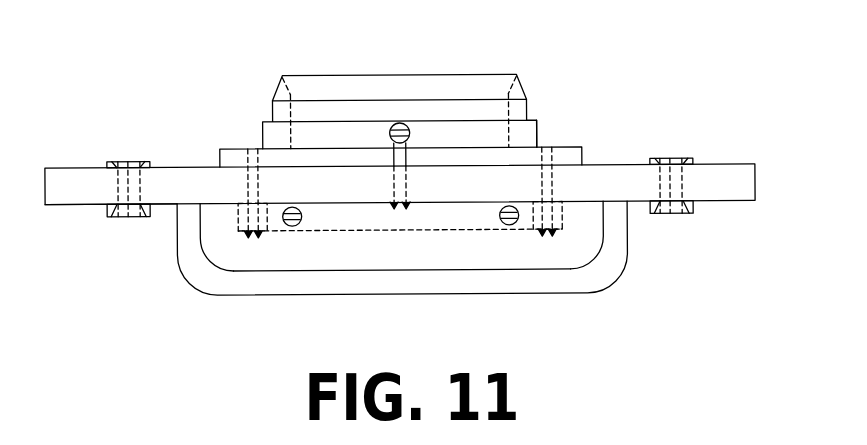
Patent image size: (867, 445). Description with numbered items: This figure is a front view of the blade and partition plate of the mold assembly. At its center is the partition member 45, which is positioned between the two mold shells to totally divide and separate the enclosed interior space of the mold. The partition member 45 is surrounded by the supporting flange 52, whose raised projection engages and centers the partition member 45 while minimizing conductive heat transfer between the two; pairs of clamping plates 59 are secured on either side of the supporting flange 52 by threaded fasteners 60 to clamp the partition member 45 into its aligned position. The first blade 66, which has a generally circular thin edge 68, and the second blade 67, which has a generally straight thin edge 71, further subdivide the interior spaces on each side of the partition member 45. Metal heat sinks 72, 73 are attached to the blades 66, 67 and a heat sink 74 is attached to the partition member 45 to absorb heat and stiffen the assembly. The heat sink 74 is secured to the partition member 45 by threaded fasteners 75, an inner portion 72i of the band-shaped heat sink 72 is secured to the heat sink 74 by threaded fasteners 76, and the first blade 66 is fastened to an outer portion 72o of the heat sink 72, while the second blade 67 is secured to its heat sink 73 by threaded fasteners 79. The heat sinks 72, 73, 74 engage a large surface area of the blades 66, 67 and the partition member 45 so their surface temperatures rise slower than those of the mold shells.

The partition member 45 is at (171, 192).
The supporting flange 52 is at (742, 182).
The clamping plates 59 is at (132, 160).
The threaded fasteners 60 is at (112, 160).
The first blade 66 is at (280, 93).
The second blade 67 is at (242, 258).
The thin edge 68 is at (364, 88).
The thin edge 71 is at (423, 282).
The heat sink 72 is at (263, 128).
The outer portion of heat sink 72o is at (509, 128).
The inner portion of heat sink 72i is at (551, 148).
The heat sink 73 is at (478, 218).
The heat sink 74 is at (569, 155).
The threaded fasteners 75 is at (246, 190).
The threaded fasteners 76 is at (395, 187).
The threaded fasteners 79 is at (290, 226).